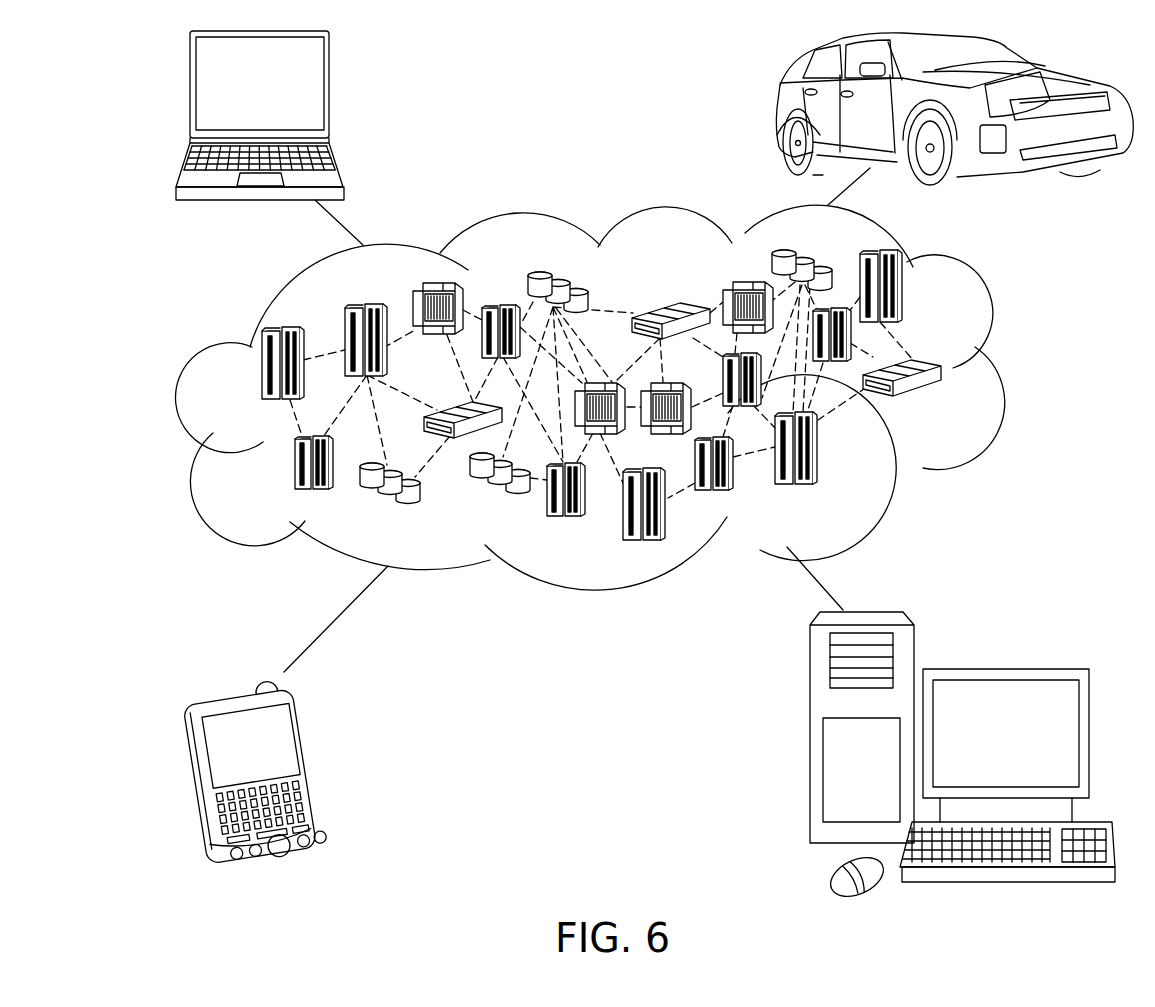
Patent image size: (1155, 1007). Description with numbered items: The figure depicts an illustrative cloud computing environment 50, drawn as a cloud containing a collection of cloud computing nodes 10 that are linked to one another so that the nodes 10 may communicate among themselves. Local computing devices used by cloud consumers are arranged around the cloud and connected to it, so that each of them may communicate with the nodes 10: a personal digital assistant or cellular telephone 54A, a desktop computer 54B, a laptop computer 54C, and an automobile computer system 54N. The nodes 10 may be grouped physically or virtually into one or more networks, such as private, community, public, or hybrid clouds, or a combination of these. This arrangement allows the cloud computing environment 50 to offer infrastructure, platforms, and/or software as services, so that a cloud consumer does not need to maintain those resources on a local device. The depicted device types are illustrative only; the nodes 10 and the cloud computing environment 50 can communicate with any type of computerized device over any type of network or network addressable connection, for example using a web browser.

The cloud computing nodes 10 is at (944, 404).
The cloud computing environment 50 is at (1003, 372).
The personal digital assistant (PDA) or cellular telephone 54A is at (321, 764).
The desktop computer 54B is at (1001, 668).
The laptop computer 54C is at (331, 91).
The automobile computer system 54N is at (779, 110).